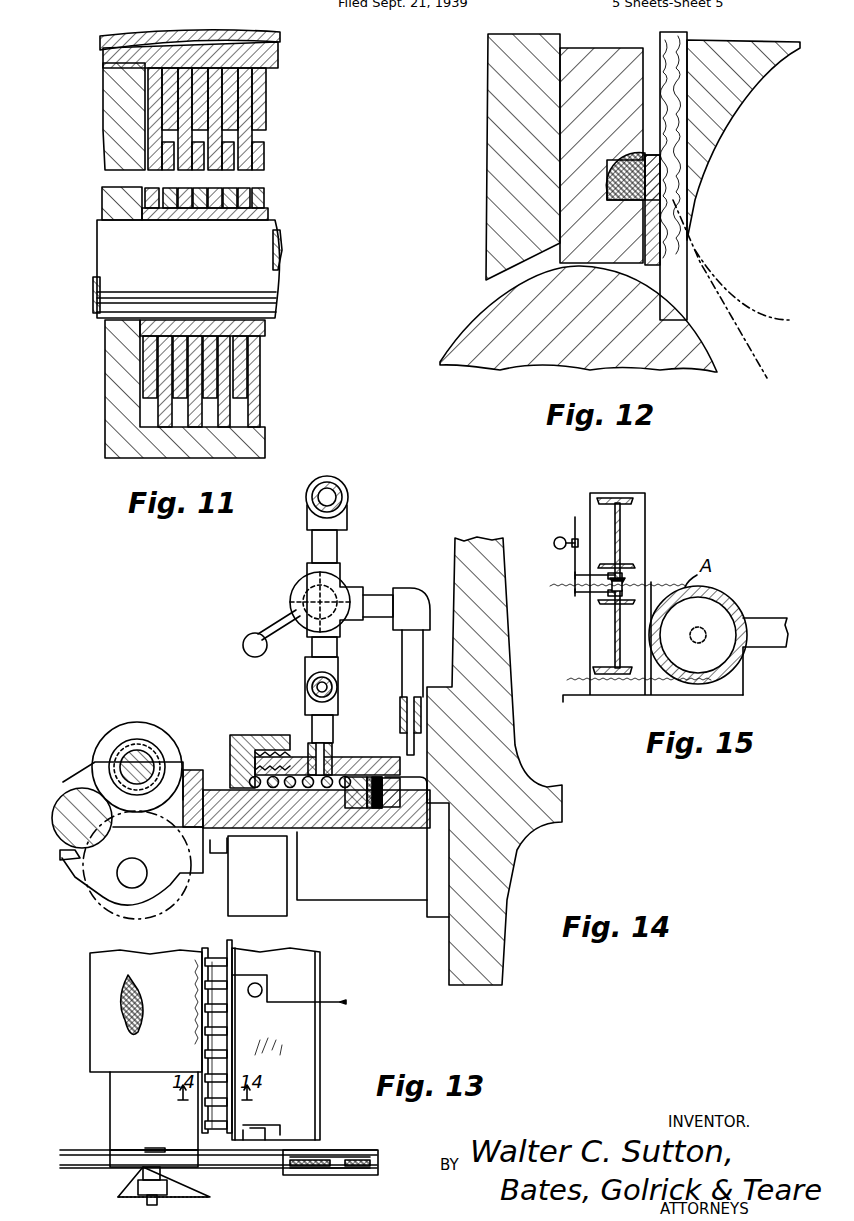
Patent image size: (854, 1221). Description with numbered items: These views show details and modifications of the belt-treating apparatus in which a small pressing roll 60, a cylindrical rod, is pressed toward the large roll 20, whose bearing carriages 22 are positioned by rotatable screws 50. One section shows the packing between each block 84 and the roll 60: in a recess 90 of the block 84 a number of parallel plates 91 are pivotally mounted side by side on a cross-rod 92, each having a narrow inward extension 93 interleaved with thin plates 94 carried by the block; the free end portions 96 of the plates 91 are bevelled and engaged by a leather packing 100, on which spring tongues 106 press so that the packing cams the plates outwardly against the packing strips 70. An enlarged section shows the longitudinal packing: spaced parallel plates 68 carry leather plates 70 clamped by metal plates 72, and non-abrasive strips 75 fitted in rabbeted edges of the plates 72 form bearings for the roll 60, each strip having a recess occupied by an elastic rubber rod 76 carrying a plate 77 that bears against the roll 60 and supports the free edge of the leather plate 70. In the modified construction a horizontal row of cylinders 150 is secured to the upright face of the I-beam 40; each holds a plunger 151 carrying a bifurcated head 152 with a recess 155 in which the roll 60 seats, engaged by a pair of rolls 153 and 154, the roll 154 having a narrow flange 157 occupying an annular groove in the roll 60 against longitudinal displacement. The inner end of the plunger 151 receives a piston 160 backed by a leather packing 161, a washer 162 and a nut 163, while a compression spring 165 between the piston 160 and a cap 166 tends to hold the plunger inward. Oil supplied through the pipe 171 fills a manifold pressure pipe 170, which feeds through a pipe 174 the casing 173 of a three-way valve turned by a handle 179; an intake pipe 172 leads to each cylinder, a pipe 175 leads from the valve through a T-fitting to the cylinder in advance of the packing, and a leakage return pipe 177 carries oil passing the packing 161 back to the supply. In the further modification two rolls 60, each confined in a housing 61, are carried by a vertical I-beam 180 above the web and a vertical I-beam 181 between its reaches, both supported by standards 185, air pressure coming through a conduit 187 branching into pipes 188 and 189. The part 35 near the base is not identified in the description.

In FIG. 11, the spring tongues 106 is at (262, 40).
In FIG. 11, the leather packing 100 is at (272, 62).
In FIG. 11, the free end portions 96 is at (225, 100).
In FIG. 11, the parallel plates 91 is at (205, 188).
In FIG. 11, the cross-rod 92 is at (266, 283).
In FIG. 11, the block 84 is at (115, 398).
In FIG. 11, the inward extension 93 is at (208, 360).
In FIG. 11, the thin plates 94 is at (225, 407).
In FIG. 11, the recess 90 is at (240, 425).
In FIG. 12, the metal plates 72 is at (490, 127).
In FIG. 12, the non-abrasive material strips 75 is at (572, 142).
In FIG. 12, the spaced parallel plates 68 is at (770, 72).
In FIG. 12, the leather plates 70 is at (690, 124).
In FIG. 12, the elastic rods 76 is at (645, 172).
In FIG. 12, the plate 77 is at (652, 258).
In FIG. 12, the pressing roll 60 is at (703, 350).
In FIG. 14, the pressing roll 60 is at (52, 798).
In FIG. 15, the pressing roll 60 is at (622, 582).
In FIG. 13, the pressing roll 60 is at (205, 948).
In FIG. 14, the I-beam 40 is at (505, 752).
In FIG. 13, the I-beam 40 is at (308, 1072).
In FIG. 14, the pressure pipe 170 is at (344, 495).
In FIG. 13, the pressure pipe 170 is at (232, 945).
In FIG. 14, the pipe 174 is at (332, 544).
In FIG. 14, the casing 173 is at (340, 583).
In FIG. 14, the handle 179 is at (275, 624).
In FIG. 14, the pipe 175 is at (330, 650).
In FIG. 14, the leakage return pipe 177 is at (307, 687).
In FIG. 14, the intake pipe 172 is at (402, 675).
In FIG. 14, the roll 153 is at (152, 712).
In FIG. 14, the bifurcated head 152 is at (195, 768).
In FIG. 14, the recess 155 is at (65, 857).
In FIG. 14, the roll 154 is at (103, 897).
In FIG. 14, the flange 157 is at (92, 920).
In FIG. 14, the plunger 151 is at (265, 823).
In FIG. 14, the cap 166 is at (262, 742).
In FIG. 14, the compression spring 165 is at (335, 765).
In FIG. 14, the leather packing 161 is at (370, 777).
In FIG. 14, the piston 160 is at (350, 808).
In FIG. 14, the washer 162 is at (378, 808).
In FIG. 14, the nut 163 is at (400, 800).
In FIG. 14, the cylinders 150 is at (368, 893).
In FIG. 13, the cylinders 150 is at (230, 1028).
In FIG. 15, the standards 185 is at (588, 496).
In FIG. 15, the conduit 187 is at (572, 522).
In FIG. 15, the vertical I-beam 180 is at (618, 520).
In FIG. 15, the housing 61 is at (616, 574).
In FIG. 15, the pipe 188 is at (577, 572).
In FIG. 15, the pipe 189 is at (577, 595).
In FIG. 15, the vertical I-beam 181 is at (612, 655).
In FIG. 15, the roll 20 is at (742, 598).
In FIG. 13, the roll 20 is at (110, 1110).
In FIG. 13, the pipe 171 is at (327, 1000).
In FIG. 13, the carriage 22 is at (108, 1168).
In FIG. 13, the clamp bolt 35 is at (185, 1190).
In FIG. 13, the rotatable screws 50 is at (355, 1175).